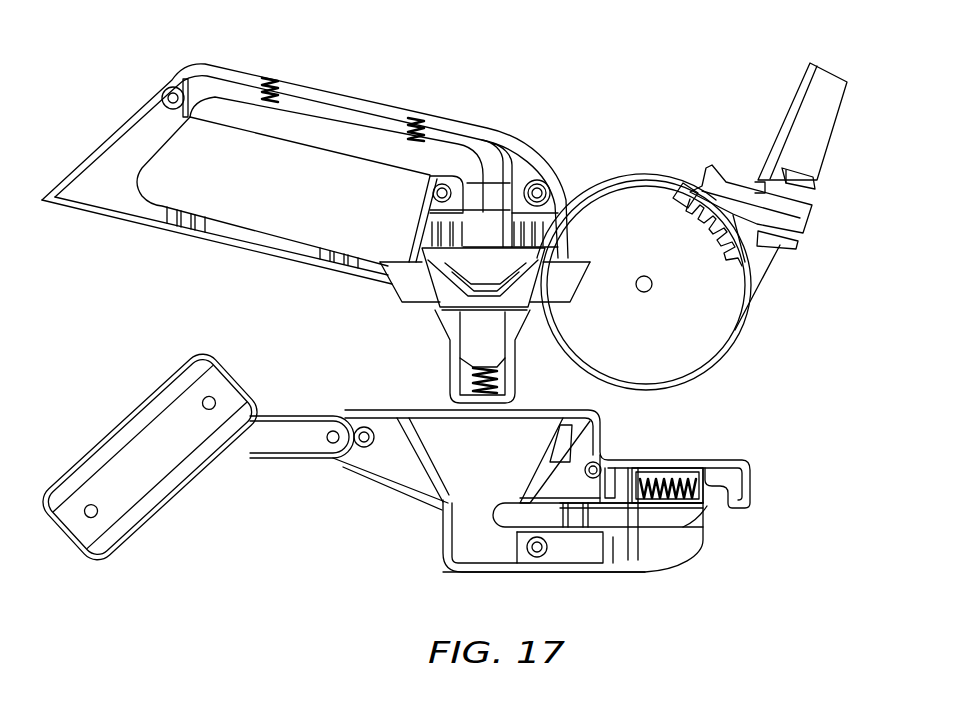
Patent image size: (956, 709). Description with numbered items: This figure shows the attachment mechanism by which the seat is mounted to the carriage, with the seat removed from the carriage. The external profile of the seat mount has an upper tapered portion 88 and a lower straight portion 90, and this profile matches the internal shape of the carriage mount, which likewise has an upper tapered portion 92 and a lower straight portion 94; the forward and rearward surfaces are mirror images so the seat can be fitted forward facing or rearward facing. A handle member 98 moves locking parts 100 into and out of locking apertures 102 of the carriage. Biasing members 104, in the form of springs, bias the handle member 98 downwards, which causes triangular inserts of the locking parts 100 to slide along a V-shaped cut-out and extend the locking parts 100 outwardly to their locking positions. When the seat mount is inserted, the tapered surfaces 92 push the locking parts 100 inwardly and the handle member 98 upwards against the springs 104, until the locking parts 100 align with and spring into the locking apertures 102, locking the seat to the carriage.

The upper tapered portion of the seat mount 88 is at (437, 322).
The lower straight portion of the seat mount 90 is at (447, 372).
The upper tapered portion of the carriage mount 92 is at (413, 463).
The lower straight portion of the carriage mount 94 is at (455, 540).
The handle member 98 is at (486, 205).
The locking parts 100 is at (568, 264).
The locking apertures 102 is at (403, 435).
The biasing members 104 is at (270, 78).